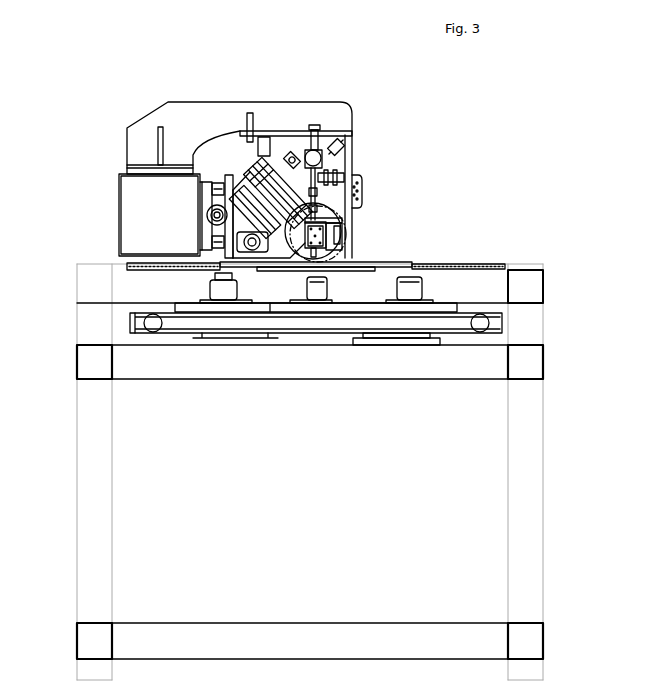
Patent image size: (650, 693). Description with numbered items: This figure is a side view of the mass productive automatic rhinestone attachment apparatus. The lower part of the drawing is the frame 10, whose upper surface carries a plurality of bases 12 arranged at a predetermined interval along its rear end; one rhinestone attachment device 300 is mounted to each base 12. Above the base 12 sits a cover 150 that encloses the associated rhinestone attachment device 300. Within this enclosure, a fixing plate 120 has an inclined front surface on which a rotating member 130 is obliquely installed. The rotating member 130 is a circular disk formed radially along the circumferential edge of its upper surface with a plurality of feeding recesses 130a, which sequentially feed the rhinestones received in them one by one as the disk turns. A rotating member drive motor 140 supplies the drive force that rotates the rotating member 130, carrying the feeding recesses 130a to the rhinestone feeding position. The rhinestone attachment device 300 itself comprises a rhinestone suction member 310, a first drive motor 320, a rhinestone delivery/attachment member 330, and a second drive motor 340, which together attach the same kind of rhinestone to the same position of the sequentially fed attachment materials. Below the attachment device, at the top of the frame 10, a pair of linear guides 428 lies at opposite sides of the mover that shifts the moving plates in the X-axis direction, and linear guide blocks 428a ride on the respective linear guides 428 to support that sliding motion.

The frame 10 is at (543, 507).
The base 12 is at (343, 225).
The fixing plate 120 is at (215, 218).
The rotating member 130 is at (283, 160).
The feeding recess 130a is at (262, 168).
The rotating member drive motor 140 is at (221, 183).
The cover 150 is at (197, 102).
The rhinestone attachment device 300 is at (395, 163).
The rhinestone suction member 310 is at (318, 125).
The first drive motor 320 is at (356, 174).
The rhinestone delivery/attachment member 330 is at (342, 205).
The second drive motor 340 is at (343, 234).
The linear guide 428 is at (225, 296).
The linear guide block 428a is at (212, 273).